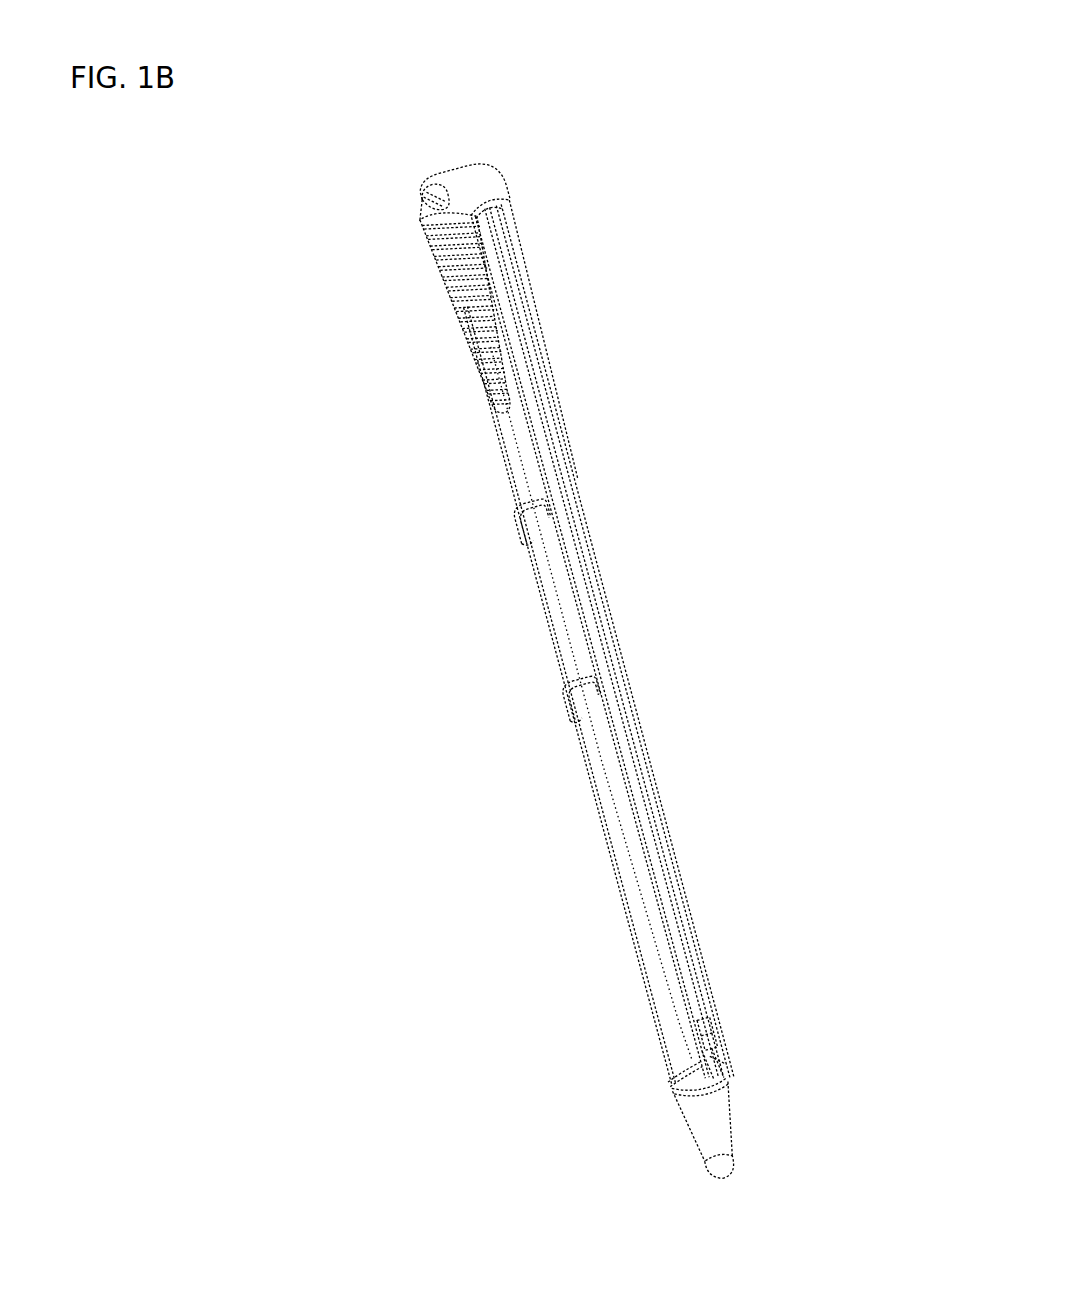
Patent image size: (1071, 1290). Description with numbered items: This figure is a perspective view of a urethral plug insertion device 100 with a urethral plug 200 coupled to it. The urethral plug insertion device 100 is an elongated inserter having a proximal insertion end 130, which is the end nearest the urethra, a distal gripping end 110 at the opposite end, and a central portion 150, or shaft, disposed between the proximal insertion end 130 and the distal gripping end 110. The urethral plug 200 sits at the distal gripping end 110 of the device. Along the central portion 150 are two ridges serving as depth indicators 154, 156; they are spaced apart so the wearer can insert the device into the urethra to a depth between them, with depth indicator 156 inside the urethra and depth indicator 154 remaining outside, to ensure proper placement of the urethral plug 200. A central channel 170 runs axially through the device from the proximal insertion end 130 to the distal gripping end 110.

The urethral plug insertion device 100 is at (589, 196).
The urethral plug 200 is at (455, 183).
The distal gripping end 110 is at (440, 255).
The central portion 150 is at (553, 618).
The depth indicator 154 is at (515, 521).
The depth indicator 156 is at (565, 700).
The central channel 170 is at (697, 1020).
The proximal insertion end 130 is at (658, 1028).